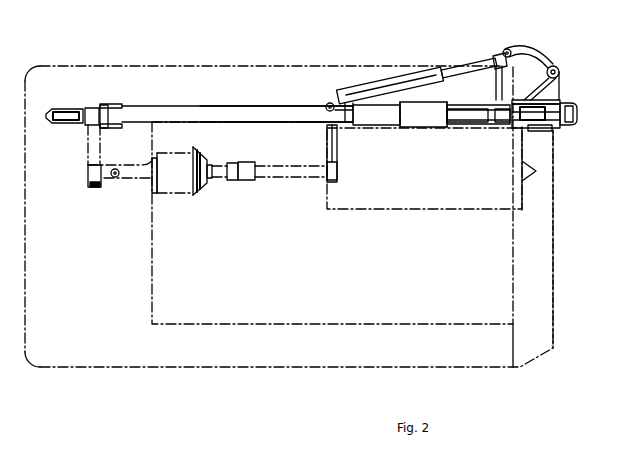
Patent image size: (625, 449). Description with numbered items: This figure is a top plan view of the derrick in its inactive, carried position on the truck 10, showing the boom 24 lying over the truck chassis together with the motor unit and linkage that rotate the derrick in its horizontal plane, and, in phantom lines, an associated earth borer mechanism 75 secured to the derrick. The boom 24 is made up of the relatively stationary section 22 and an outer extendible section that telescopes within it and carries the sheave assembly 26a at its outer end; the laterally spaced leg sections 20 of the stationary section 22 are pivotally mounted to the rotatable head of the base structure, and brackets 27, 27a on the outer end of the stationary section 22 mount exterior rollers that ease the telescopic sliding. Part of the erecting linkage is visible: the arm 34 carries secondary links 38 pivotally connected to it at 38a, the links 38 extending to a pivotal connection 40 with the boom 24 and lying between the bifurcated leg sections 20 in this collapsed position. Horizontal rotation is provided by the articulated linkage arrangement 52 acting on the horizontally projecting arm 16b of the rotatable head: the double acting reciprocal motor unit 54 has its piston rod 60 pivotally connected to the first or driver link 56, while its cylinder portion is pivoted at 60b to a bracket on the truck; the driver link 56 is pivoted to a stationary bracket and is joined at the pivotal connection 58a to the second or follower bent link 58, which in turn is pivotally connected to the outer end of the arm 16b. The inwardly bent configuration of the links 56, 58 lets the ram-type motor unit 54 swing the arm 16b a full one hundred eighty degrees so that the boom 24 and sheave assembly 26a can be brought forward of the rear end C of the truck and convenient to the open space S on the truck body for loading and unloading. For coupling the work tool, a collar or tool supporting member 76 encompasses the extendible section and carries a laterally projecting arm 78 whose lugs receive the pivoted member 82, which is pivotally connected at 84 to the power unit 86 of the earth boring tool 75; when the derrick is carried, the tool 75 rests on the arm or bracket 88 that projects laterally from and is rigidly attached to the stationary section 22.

The vehicle frame outline 10 is at (100, 369).
The open space S is at (477, 324).
The rear end C is at (553, 247).
The earth borer mechanism 75 is at (381, 216).
The horizontally projecting arm 16b is at (565, 83).
The leg sections 20 is at (452, 109).
The relatively stationary section 22 is at (255, 107).
The boom 24 is at (181, 101).
The sheave assembly 26a is at (66, 102).
The bracket 27 is at (116, 128).
The bracket 27a is at (113, 104).
The arm or link 34 is at (575, 124).
The secondary arms or links 38 is at (472, 110).
The pivotal connection 38a is at (573, 103).
The pivotal connection 40 is at (440, 128).
The articulated linkage arrangement 52 is at (549, 57).
The double acting reciprocal motor unit 54 is at (379, 78).
The first or driver link 56 is at (493, 64).
The second or follower bent link 58 is at (558, 68).
The pivotal connection 58a is at (509, 50).
The piston rod 60 is at (457, 70).
The pivot 60b is at (328, 104).
The collar or tool supporting member 76 is at (92, 108).
The arm 78 is at (88, 142).
The pivoted member 82 is at (100, 188).
The pivotal connection 84 is at (118, 178).
The power unit 86 is at (175, 193).
The arm or bracket 88 is at (327, 142).